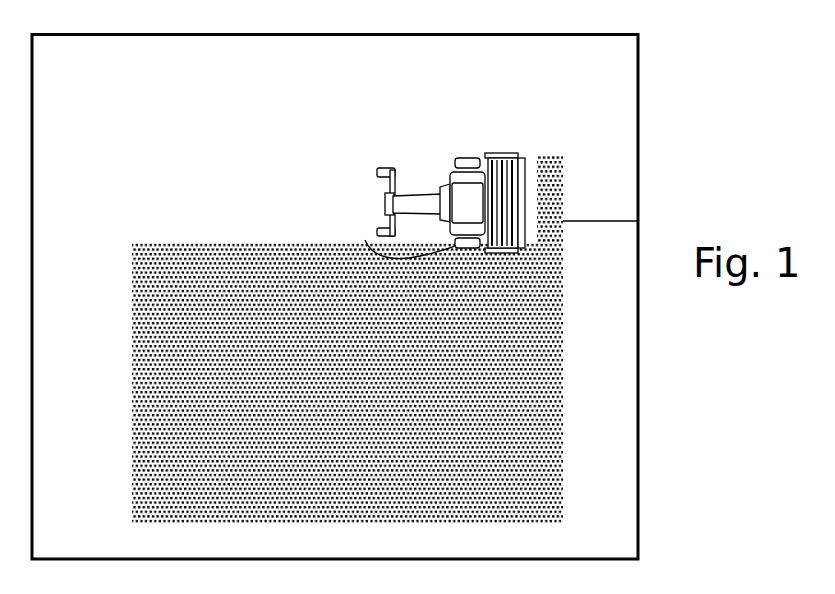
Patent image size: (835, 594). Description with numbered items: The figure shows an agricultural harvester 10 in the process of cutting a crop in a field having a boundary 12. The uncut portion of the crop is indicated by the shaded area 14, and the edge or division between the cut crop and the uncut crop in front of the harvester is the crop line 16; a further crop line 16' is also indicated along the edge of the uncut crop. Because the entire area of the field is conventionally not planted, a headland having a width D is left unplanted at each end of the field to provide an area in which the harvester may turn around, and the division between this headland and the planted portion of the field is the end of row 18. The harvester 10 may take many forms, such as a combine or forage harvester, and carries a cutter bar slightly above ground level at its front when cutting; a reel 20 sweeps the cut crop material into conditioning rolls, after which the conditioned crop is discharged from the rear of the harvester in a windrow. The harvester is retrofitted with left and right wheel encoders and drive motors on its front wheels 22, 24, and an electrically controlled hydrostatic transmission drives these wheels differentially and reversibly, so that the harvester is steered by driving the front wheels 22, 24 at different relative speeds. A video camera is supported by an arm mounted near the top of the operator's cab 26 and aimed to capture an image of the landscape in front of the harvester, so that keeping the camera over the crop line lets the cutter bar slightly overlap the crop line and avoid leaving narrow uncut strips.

The agricultural harvester 10 is at (494, 100).
The boundary 12 is at (640, 437).
The shaded area 14 is at (133, 393).
The crop line 16 is at (583, 168).
The crop edge 16' is at (256, 195).
The end of row 18 is at (563, 190).
The reel 20 is at (512, 185).
The front wheel 22 is at (417, 160).
The front wheel 24 is at (365, 240).
The operator's cab 26 is at (467, 198).
The width D is at (583, 226).